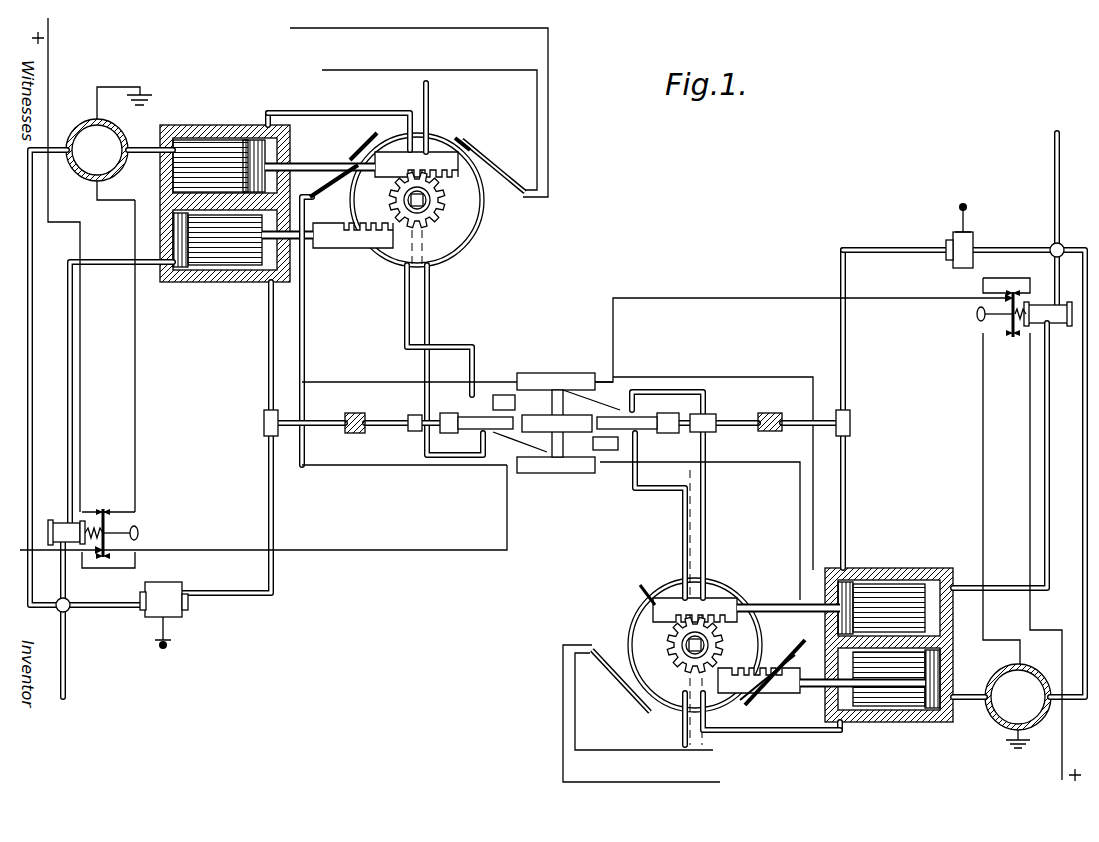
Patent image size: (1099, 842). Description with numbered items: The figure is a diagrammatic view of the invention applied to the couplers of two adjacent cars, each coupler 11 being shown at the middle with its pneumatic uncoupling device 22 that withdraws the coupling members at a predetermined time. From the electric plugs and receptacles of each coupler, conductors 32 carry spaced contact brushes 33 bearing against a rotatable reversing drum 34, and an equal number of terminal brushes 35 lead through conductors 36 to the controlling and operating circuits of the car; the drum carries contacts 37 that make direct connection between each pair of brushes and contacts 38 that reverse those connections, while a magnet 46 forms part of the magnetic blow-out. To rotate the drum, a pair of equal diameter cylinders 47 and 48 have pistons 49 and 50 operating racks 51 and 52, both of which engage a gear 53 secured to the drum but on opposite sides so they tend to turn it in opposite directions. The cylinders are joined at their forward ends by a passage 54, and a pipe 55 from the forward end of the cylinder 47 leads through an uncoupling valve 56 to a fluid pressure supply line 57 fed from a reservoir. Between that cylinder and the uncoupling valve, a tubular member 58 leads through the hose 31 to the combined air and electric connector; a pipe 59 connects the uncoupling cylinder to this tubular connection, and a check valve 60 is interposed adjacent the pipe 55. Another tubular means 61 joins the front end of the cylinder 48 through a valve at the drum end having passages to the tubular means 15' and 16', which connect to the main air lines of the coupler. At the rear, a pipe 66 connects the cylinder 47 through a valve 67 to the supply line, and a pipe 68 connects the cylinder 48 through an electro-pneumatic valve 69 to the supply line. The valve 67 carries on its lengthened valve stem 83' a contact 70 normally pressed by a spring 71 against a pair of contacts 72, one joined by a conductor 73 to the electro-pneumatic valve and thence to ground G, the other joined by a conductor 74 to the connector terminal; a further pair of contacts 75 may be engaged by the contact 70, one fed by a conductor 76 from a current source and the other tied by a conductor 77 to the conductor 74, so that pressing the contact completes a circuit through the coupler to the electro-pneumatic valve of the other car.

The coupler 11 is at (575, 385).
The tubular means 15' is at (546, 505).
The tubular means 16' is at (568, 423).
The pneumatic uncoupling device 22 is at (505, 395).
The hose 31 is at (478, 420).
The conductors 32 is at (330, 380).
The contact brushes 33 is at (330, 195).
The reversing drum 34 is at (398, 255).
The terminal brushes 35 is at (490, 168).
The conductors 36 is at (472, 28).
The contacts 37 is at (465, 250).
The contacts 38 is at (380, 135).
The magnet 46 is at (225, 140).
The cylinder 47 is at (240, 262).
The cylinder 48 is at (880, 722).
The piston 49 is at (178, 268).
The piston 50 is at (262, 120).
The rack 51 is at (355, 240).
The rack 52 is at (432, 160).
The gear 53 is at (440, 205).
The passage 54 is at (290, 168).
The pipe 55 is at (268, 340).
The uncoupling valve 56 is at (170, 620).
The fluid pressure supply line 57 is at (25, 290).
The tubular member 58 is at (360, 435).
The pipe 59 is at (460, 395).
The check valve 60 is at (355, 433).
The tubular means 61 is at (318, 113).
The pipe 66 is at (108, 262).
The valve 67 is at (58, 522).
The pipe 68 is at (148, 148).
The electro-pneumatic valve 69 is at (110, 170).
The contact 70 is at (110, 515).
The spring 71 is at (115, 545).
The contacts 72 is at (105, 510).
The conductor 73 is at (137, 390).
The conductor 74 is at (345, 550).
The contacts 75 is at (99, 508).
The conductor 76 is at (82, 385).
The conductor 77 is at (98, 568).
The valve stem 83' is at (558, 423).
The ground G is at (150, 95).